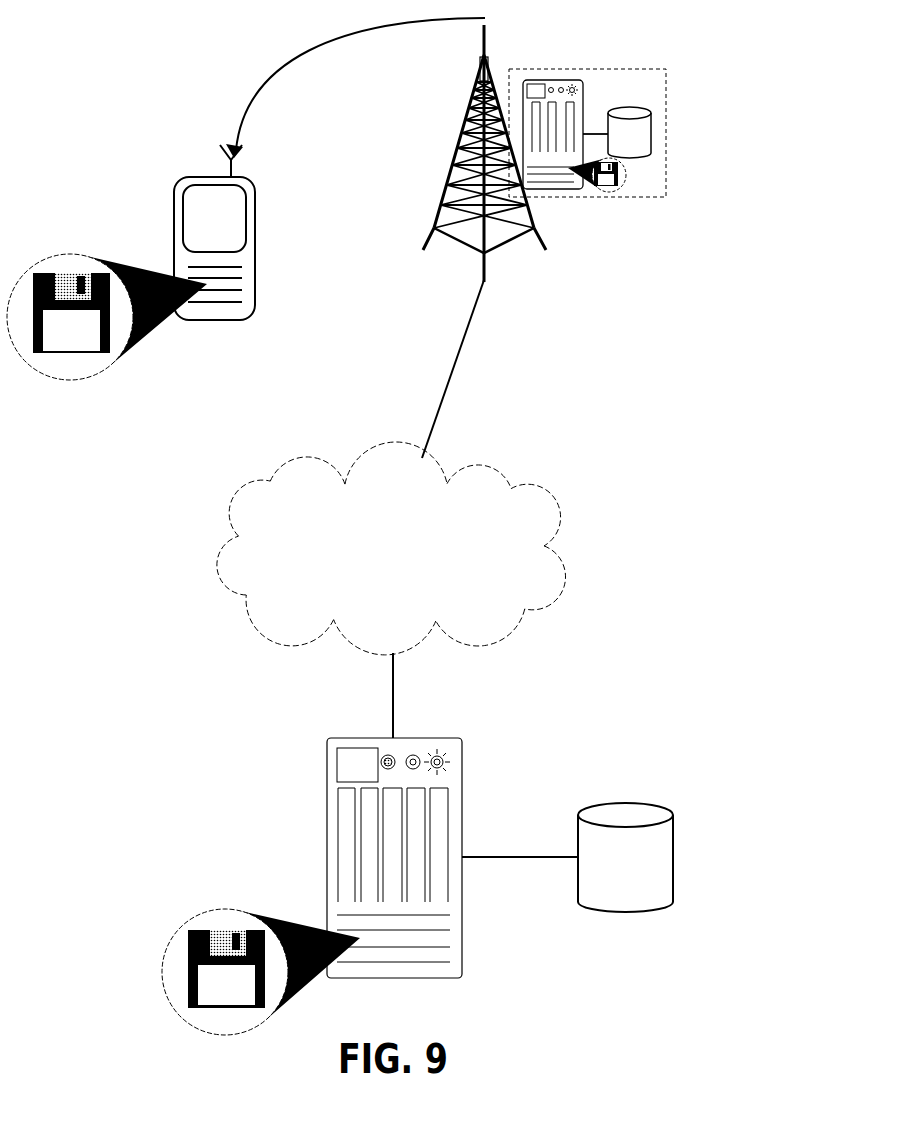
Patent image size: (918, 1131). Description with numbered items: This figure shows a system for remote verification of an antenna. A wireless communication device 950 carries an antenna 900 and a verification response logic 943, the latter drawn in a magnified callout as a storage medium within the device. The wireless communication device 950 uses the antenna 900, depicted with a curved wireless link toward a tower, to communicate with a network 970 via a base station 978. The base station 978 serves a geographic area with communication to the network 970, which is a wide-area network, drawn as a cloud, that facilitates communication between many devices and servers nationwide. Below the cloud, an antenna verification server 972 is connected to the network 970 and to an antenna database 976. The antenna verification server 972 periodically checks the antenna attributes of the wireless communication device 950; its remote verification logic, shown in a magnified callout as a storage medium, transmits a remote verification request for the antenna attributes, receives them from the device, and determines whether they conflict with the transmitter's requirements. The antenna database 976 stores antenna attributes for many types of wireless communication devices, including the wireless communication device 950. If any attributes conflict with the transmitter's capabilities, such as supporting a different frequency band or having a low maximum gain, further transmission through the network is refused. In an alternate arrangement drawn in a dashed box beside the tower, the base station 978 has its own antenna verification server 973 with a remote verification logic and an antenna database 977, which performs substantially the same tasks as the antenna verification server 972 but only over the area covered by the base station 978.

The antenna 900 is at (238, 155).
The wireless communication device 950 is at (172, 203).
The verification response logic 943 is at (100, 355).
The base station 978 is at (457, 153).
The antenna verification server 973 is at (630, 133).
The antenna database 977 is at (652, 138).
The network 970 is at (528, 487).
The antenna verification server 972 is at (325, 810).
The antenna database 976 is at (673, 856).